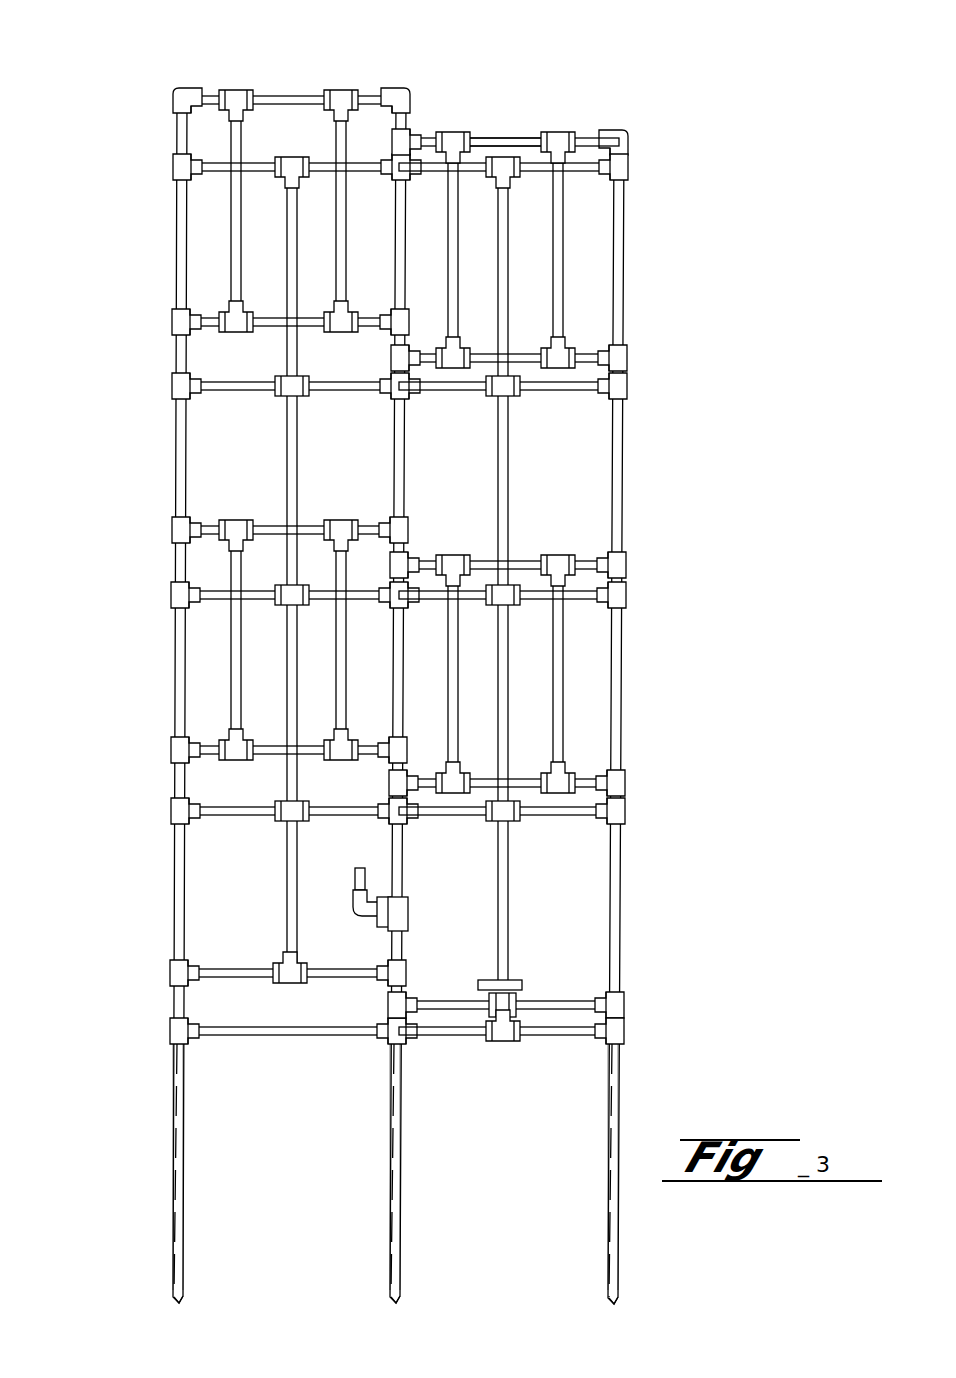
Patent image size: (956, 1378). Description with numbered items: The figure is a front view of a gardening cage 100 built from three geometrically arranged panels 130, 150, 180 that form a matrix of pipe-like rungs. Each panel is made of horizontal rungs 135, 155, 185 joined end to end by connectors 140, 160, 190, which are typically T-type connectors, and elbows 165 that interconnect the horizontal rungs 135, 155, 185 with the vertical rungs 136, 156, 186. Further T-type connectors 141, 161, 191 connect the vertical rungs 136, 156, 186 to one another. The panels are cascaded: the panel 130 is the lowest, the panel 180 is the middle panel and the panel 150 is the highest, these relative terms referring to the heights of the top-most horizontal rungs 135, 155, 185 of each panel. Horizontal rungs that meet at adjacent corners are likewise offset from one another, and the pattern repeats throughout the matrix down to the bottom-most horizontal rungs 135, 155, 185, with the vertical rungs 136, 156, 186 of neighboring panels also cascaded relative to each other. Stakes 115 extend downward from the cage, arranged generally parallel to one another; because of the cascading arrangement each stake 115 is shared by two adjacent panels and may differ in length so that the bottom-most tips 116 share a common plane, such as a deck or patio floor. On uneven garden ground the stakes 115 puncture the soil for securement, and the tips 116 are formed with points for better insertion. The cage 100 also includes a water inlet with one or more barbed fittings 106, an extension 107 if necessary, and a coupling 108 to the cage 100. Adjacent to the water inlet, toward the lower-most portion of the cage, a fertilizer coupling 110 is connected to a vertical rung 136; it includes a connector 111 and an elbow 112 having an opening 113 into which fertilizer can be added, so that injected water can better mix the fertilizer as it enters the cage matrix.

The gardening cage 100 is at (83, 150).
The barbed fitting 106 is at (490, 990).
The extension 107 is at (528, 998).
The coupling 108 is at (528, 976).
The fertilizer coupling 110 is at (376, 926).
The connector 111 is at (403, 919).
The elbow 112 is at (352, 900).
The opening 113 is at (357, 868).
The stake 115 is at (172, 1152).
The tip 116 is at (185, 1300).
The panel 130 is at (286, 1066).
The horizontal rung 135 is at (366, 162).
The vertical rung 136 is at (400, 905).
The connector 140 is at (386, 1040).
The connector 141 is at (190, 818).
The panel 150 is at (259, 60).
The horizontal rung 155 is at (288, 97).
The vertical rung 156 is at (305, 440).
The connector 160 is at (231, 513).
The connector 161 is at (170, 745).
The elbow 165 is at (183, 92).
The panel 180 is at (502, 90).
The horizontal rung 185 is at (522, 136).
The vertical rung 186 is at (566, 712).
The connector 190 is at (457, 128).
The connector 191 is at (633, 175).